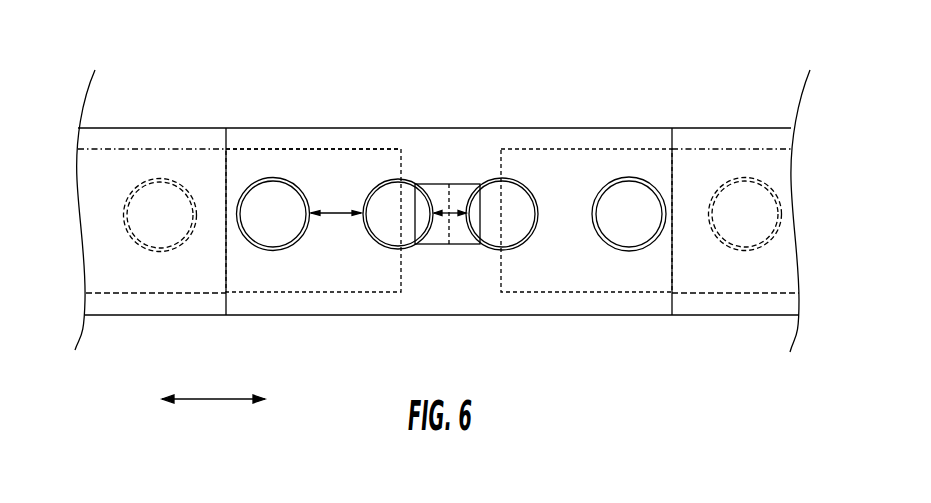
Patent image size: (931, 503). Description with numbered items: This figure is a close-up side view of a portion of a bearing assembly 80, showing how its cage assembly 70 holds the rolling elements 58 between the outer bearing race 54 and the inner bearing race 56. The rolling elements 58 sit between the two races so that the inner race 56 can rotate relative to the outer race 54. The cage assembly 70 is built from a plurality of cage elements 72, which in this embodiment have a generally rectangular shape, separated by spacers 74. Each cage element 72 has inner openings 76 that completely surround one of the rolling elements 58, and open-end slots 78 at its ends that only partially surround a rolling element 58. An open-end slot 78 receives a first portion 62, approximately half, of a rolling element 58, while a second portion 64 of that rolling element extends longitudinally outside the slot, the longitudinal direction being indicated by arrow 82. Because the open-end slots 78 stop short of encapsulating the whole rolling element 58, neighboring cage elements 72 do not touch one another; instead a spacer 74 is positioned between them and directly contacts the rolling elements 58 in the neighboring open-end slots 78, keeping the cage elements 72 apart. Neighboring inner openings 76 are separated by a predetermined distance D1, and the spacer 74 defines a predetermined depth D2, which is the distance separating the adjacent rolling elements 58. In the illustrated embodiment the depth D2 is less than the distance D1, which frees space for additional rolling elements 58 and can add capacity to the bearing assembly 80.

The outer bearing race 54 is at (732, 140).
The inner bearing race 56 is at (613, 138).
The rolling elements 58 is at (279, 228).
The first portion of rolling element 62 is at (382, 203).
The second portion of rolling element 64 is at (408, 210).
The cage assembly 70 is at (298, 140).
The cage elements 72 is at (320, 167).
The spacers 74 is at (462, 192).
The inner openings 76 is at (608, 248).
The open-end slots 78 is at (522, 182).
The bearing assembly 80 is at (190, 71).
The arrow 82 is at (222, 401).
The predetermined distance D1 is at (337, 218).
The predetermined depth D2 is at (455, 218).